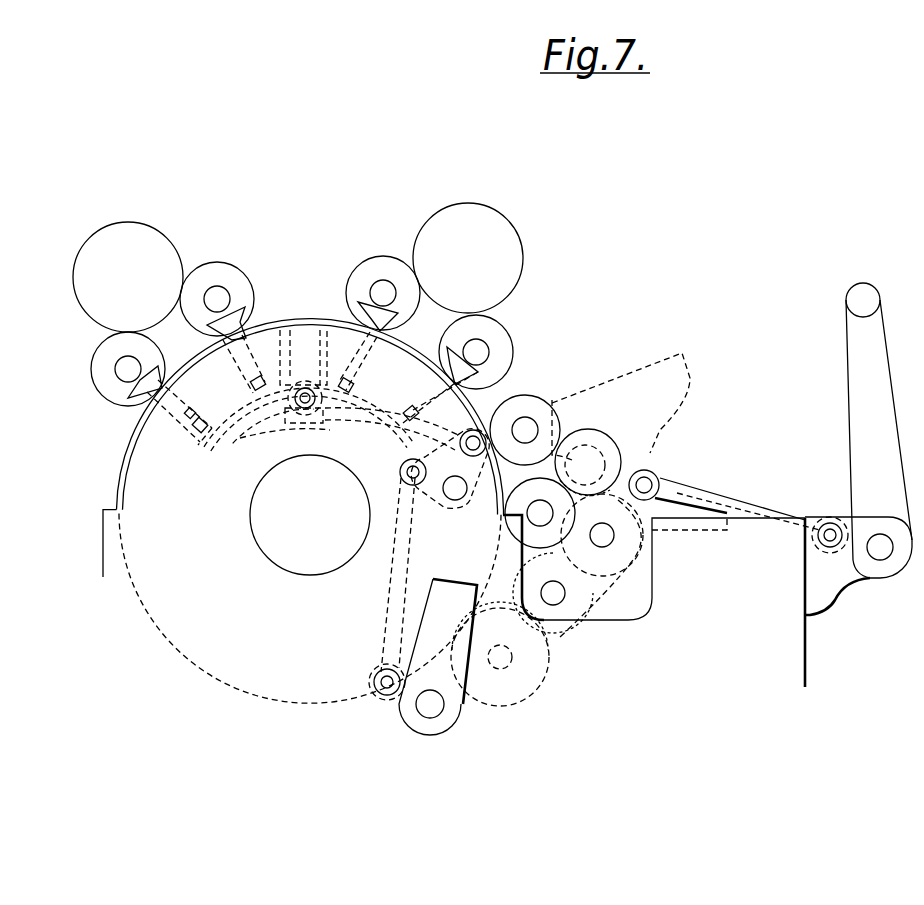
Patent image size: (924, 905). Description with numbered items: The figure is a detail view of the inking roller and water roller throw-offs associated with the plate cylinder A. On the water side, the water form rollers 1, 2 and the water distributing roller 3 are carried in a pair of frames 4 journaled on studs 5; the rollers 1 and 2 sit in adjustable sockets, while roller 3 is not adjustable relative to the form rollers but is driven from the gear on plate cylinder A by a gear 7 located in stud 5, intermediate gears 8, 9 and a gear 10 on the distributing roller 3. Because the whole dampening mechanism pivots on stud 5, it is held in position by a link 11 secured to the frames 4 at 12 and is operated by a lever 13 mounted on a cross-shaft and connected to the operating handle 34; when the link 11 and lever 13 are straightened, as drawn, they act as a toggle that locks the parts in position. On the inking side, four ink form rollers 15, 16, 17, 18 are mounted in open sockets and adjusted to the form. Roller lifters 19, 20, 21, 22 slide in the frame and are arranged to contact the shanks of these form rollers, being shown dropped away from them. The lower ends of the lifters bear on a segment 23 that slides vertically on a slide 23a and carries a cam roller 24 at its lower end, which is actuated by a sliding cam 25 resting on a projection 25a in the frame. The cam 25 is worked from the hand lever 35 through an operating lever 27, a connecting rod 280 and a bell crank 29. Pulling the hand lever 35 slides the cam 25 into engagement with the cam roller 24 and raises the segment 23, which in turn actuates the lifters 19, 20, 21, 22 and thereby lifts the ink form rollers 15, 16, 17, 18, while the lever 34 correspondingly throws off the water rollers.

The water form roller 1 is at (531, 397).
The water form roller 2 is at (568, 535).
The water distributing roller 3 is at (596, 430).
The frames 4 is at (556, 640).
The stud 5 is at (513, 665).
The gear 7 is at (500, 692).
The intermediate gear 8 is at (590, 607).
The intermediate gear 9 is at (630, 556).
The gear 10 is at (645, 477).
The link 11 is at (778, 501).
The connection point 12 is at (650, 487).
The lever 13 is at (834, 550).
The ink form roller 15 is at (93, 366).
The ink form roller 16 is at (216, 263).
The ink form roller 17 is at (382, 257).
The ink form roller 18 is at (505, 335).
The roller lifter 19 is at (145, 396).
The roller lifter 20 is at (250, 318).
The roller lifter 21 is at (398, 324).
The roller lifter 22 is at (480, 370).
The segment 23 is at (228, 440).
The slide 23a is at (316, 328).
The cam roller 24 is at (304, 412).
The cam 25 is at (352, 395).
The projection 25a is at (312, 420).
The operating lever 27 is at (392, 702).
The bell crank 29 is at (448, 498).
The lever 34 is at (850, 417).
The lever 35 is at (423, 628).
The connecting rod 280 is at (388, 575).
The plate cylinder A is at (312, 511).